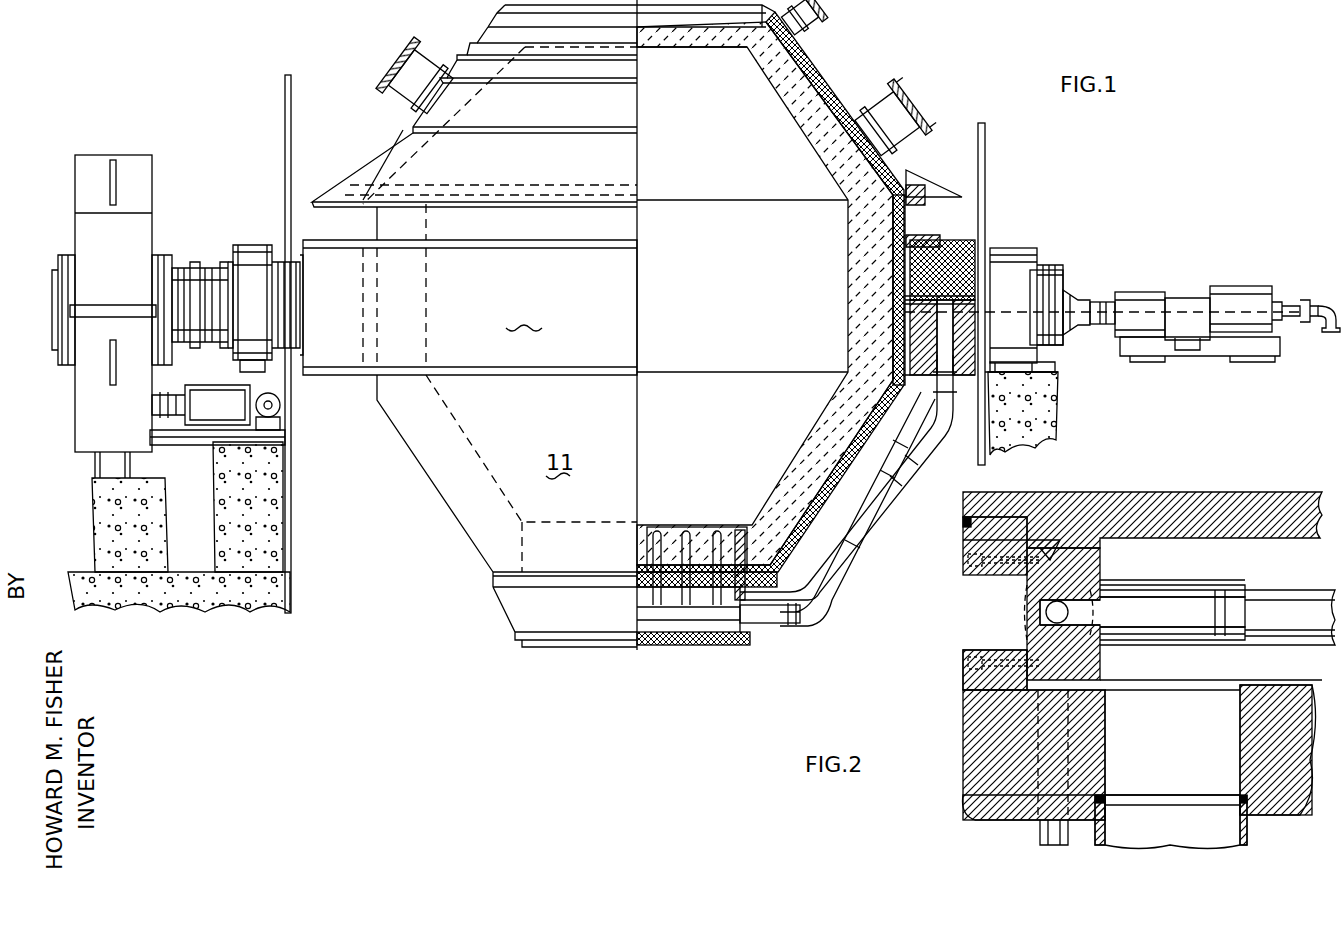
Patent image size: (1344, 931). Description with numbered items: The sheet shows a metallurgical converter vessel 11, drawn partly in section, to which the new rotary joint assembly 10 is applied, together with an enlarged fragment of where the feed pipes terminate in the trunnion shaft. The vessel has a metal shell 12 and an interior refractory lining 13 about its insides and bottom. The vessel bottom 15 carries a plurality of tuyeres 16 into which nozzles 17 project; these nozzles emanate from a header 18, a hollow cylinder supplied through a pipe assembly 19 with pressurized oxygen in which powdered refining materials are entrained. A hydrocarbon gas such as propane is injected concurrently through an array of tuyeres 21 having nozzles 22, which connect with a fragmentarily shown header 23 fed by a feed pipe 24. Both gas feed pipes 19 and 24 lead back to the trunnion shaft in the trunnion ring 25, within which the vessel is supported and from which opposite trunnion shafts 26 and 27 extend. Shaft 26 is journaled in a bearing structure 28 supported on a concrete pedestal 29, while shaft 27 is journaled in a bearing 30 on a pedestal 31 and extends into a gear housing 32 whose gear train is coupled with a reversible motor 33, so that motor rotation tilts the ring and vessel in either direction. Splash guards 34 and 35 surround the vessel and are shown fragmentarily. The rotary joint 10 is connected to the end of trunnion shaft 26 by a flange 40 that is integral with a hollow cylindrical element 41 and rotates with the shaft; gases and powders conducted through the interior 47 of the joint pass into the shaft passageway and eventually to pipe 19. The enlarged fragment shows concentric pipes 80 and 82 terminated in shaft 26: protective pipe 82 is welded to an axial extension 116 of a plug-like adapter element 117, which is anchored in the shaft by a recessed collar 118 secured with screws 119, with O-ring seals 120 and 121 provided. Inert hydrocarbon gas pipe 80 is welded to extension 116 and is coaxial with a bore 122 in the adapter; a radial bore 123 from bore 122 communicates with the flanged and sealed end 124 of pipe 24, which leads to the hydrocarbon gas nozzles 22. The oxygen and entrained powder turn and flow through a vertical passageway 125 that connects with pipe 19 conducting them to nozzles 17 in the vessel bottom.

In FIG. 1, the rotary joint assembly 10 is at (1154, 292).
In FIG. 1, the converter vessel 11 is at (632, 325).
In FIG. 1, the metal shell 12 is at (840, 97).
In FIG. 1, the refractory lining 13 is at (808, 84).
In FIG. 1, the vessel bottom 15 is at (652, 533).
In FIG. 1, the tuyeres 16 is at (672, 538).
In FIG. 1, the nozzles 17 is at (678, 545).
In FIG. 1, the header 18 is at (686, 645).
In FIG. 1, the pipe assembly 19 is at (852, 576).
In FIG. 2, the pipe assembly 19 is at (1240, 822).
In FIG. 1, the tuyeres 21 is at (741, 540).
In FIG. 1, the nozzles 22 is at (725, 540).
In FIG. 1, the header 23 is at (741, 645).
In FIG. 1, the feed pipe 24 is at (898, 478).
In FIG. 2, the feed pipe 24 is at (1040, 832).
In FIG. 1, the trunnion ring 25 is at (968, 238).
In FIG. 1, the trunnion shaft 26 is at (1008, 275).
In FIG. 2, the trunnion shaft 26 is at (1248, 512).
In FIG. 1, the trunnion shaft 27 is at (185, 266).
In FIG. 1, the bearing structure 28 is at (1042, 262).
In FIG. 1, the concrete pedestal 29 is at (1062, 414).
In FIG. 1, the bearing 30 is at (254, 245).
In FIG. 1, the pedestal 31 is at (291, 498).
In FIG. 1, the gear housing 32 is at (139, 184).
In FIG. 1, the reversible motor 33 is at (212, 428).
In FIG. 1, the splash guard 34 is at (292, 86).
In FIG. 1, the splash guard 35 is at (986, 132).
In FIG. 1, the flange 40 is at (1068, 298).
In FIG. 1, the hollow cylindrical element 41 is at (1096, 304).
In FIG. 2, the interior of hollow member 47 is at (1217, 635).
In FIG. 2, the inert hydrocarbon gas pipe 80 is at (1214, 618).
In FIG. 2, the protective pipe 82 is at (1222, 590).
In FIG. 2, the axial extension 116 is at (1102, 584).
In FIG. 2, the plug-like adapter element 117 is at (1090, 550).
In FIG. 2, the recessed collar 118 is at (985, 536).
In FIG. 2, the screws 119 is at (965, 562).
In FIG. 2, the O-ring seal 120 is at (1062, 532).
In FIG. 2, the O-ring seal 121 is at (972, 496).
In FIG. 1, the bore 122 is at (906, 298).
In FIG. 2, the bore 122 is at (1088, 642).
In FIG. 2, the radial bore 123 is at (1047, 612).
In FIG. 2, the flanged and sealed end 124 is at (1104, 690).
In FIG. 2, the vertical passageway 125 is at (1230, 766).